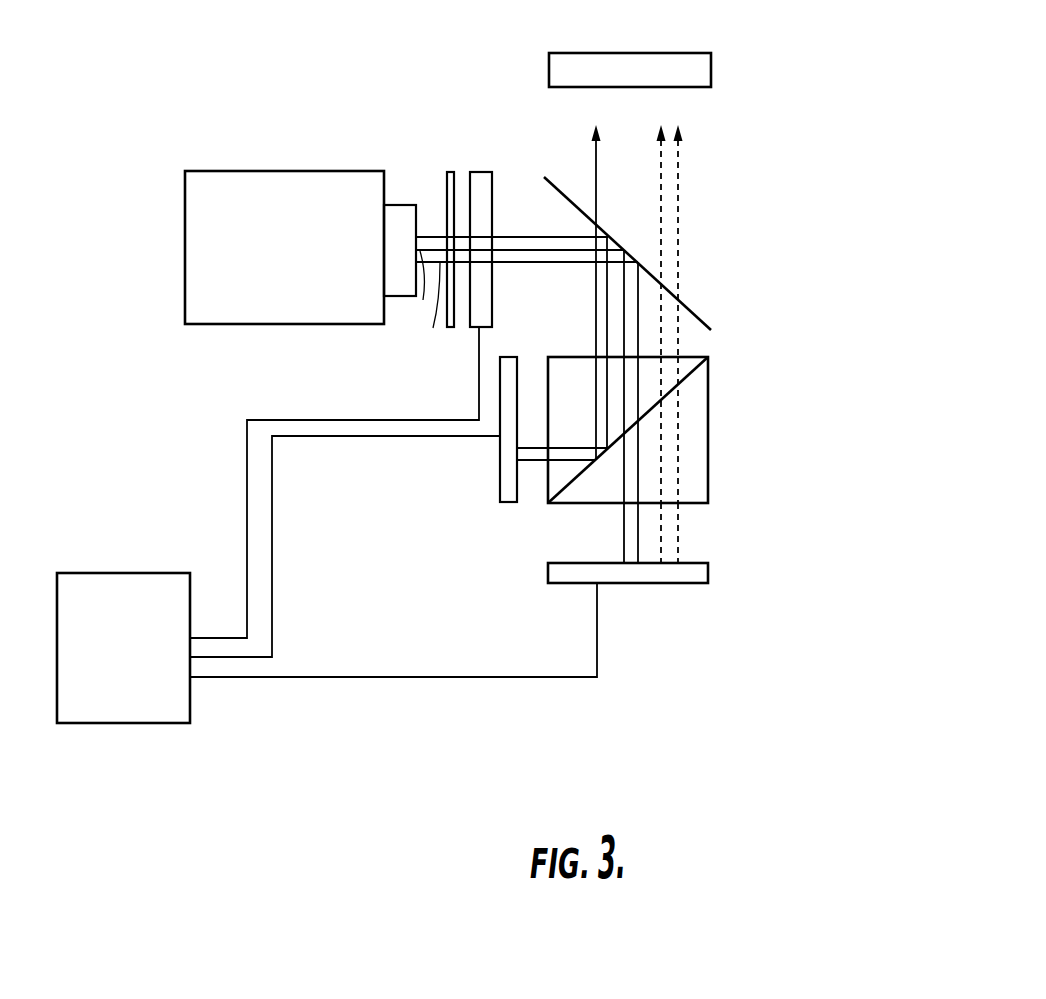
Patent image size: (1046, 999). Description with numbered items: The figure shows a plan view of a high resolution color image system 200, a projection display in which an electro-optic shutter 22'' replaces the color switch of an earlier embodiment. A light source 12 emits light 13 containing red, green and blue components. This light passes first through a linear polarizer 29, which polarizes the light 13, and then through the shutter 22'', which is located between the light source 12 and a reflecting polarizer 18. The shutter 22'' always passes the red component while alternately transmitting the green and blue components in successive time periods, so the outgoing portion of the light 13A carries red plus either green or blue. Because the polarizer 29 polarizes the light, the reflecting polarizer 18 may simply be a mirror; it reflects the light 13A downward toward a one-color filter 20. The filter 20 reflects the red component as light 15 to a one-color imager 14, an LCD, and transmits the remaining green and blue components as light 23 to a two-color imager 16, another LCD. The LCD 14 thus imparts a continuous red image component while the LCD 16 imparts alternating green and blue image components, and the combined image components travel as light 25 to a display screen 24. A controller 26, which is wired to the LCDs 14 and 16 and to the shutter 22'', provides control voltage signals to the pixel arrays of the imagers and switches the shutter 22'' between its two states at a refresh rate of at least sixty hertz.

The light source 12 is at (282, 171).
The light 13 is at (416, 345).
The outgoing portion of the light 13A is at (549, 272).
The linear polarizer 29 is at (453, 172).
The shutter 22'' is at (479, 212).
The reflecting polarizer 18 is at (700, 317).
The light 25 is at (701, 164).
The display screen 24 is at (650, 53).
The high resolution color image system 200 is at (851, 114).
The one-color filter 20 is at (688, 380).
The light 23 is at (690, 530).
The one-color imager 14 is at (500, 487).
The light 15 is at (531, 478).
The two-color imager 16 is at (677, 583).
The controller 26 is at (160, 723).